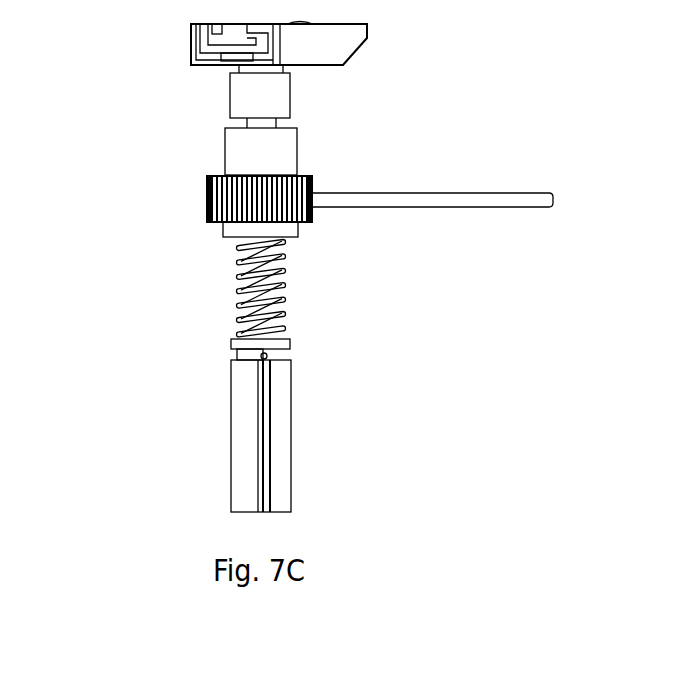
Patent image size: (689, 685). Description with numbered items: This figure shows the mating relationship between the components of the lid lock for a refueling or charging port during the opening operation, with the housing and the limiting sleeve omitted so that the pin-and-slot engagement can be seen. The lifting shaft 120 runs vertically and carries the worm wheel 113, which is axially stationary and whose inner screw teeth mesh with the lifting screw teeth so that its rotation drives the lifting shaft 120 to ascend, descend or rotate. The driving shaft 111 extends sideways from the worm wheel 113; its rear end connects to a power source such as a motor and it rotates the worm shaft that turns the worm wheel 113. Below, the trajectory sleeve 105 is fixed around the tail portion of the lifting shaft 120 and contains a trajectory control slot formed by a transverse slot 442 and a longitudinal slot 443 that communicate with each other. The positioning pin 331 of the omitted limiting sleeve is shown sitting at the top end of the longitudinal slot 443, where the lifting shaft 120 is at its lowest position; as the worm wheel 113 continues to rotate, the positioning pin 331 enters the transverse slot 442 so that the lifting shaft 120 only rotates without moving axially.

The worm wheel 113 is at (228, 148).
The driving shaft 111 is at (478, 205).
The lifting shaft 120 is at (235, 293).
The transverse slot 442 is at (237, 355).
The positioning pin 331 is at (266, 355).
The trajectory sleeve 105 is at (283, 432).
The longitudinal slot 443 is at (263, 455).